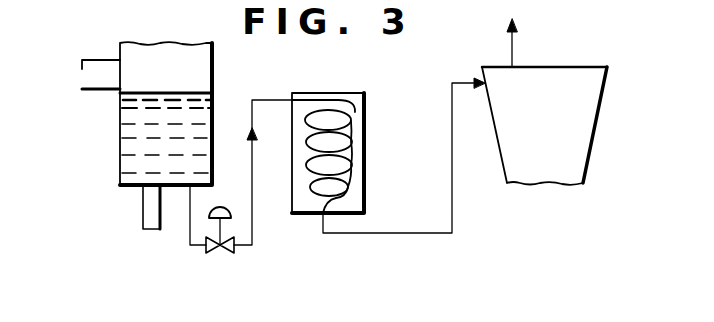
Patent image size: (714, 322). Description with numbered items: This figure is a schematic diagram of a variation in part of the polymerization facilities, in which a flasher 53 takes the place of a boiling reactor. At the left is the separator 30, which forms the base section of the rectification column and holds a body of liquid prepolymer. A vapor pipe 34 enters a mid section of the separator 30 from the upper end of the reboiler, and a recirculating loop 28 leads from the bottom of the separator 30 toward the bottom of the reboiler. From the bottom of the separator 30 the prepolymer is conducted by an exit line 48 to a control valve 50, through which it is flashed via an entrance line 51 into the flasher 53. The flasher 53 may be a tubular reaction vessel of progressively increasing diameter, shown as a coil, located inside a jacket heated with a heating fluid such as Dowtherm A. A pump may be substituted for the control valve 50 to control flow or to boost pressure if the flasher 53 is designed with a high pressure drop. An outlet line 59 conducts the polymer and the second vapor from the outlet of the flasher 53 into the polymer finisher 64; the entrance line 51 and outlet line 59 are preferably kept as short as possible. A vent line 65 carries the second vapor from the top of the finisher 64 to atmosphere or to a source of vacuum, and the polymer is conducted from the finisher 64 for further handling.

The recirculating loop 28 is at (144, 205).
The separator 30 is at (120, 149).
The vapor pipe 34 is at (101, 64).
The exit line 48 is at (190, 231).
The control valve 50 is at (222, 251).
The entrance line 51 is at (254, 205).
The flasher 53 is at (363, 162).
The outlet line 59 is at (398, 233).
The polymer finisher 64 is at (585, 66).
The vent line 65 is at (513, 50).